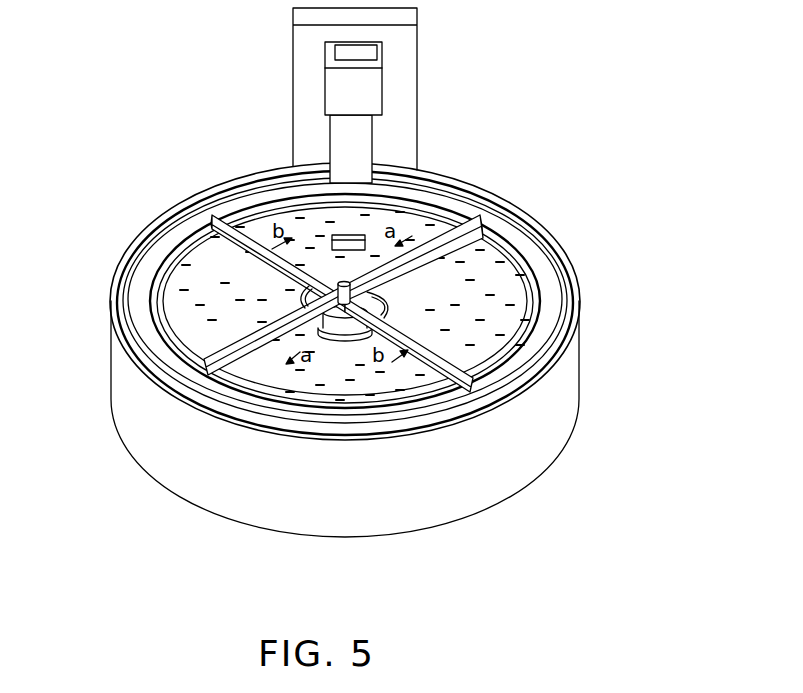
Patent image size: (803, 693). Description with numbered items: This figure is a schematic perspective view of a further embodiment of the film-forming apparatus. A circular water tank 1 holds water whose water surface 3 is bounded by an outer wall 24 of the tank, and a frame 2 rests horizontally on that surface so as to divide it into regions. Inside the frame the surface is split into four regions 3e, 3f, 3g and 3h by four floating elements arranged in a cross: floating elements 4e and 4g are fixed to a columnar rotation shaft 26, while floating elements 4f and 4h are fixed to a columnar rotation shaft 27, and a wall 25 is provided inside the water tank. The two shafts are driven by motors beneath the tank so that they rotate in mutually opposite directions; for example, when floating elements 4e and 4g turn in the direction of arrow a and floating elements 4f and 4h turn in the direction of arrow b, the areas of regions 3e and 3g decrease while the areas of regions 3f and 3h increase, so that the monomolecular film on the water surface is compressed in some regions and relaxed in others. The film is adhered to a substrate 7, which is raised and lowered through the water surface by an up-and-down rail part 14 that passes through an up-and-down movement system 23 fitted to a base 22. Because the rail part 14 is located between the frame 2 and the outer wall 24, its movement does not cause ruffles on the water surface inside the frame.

The water tank 1 is at (574, 403).
The frame 2 is at (545, 297).
The water surface 3 is at (555, 330).
The region 3e is at (435, 213).
The region 3f is at (497, 268).
The region 3g is at (410, 393).
The region 3h is at (175, 265).
The floating element 4e is at (483, 213).
The floating element 4f is at (475, 372).
The floating element 4g is at (255, 357).
The floating element 4h is at (212, 217).
The substrate 7 is at (363, 233).
The up-and-down rail part 14 is at (338, 135).
The base 22 is at (417, 71).
The up-and-down movement system 23 is at (333, 85).
The outer wall 24 is at (117, 308).
The wall 25 is at (300, 302).
The columnar rotation shaft 26 is at (341, 282).
The columnar rotation shaft 27 is at (390, 312).